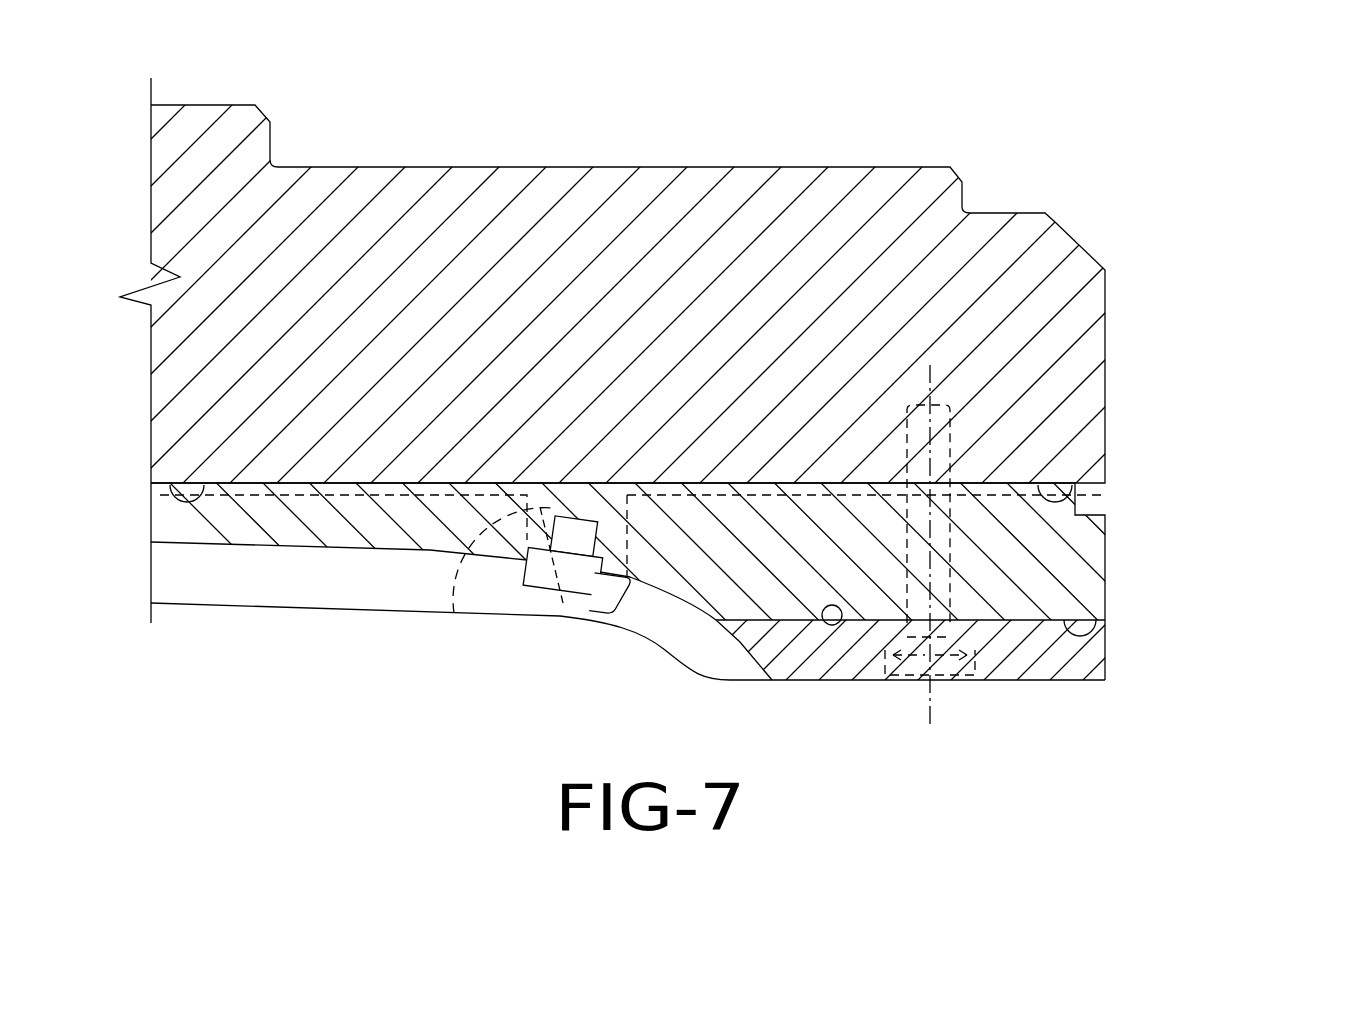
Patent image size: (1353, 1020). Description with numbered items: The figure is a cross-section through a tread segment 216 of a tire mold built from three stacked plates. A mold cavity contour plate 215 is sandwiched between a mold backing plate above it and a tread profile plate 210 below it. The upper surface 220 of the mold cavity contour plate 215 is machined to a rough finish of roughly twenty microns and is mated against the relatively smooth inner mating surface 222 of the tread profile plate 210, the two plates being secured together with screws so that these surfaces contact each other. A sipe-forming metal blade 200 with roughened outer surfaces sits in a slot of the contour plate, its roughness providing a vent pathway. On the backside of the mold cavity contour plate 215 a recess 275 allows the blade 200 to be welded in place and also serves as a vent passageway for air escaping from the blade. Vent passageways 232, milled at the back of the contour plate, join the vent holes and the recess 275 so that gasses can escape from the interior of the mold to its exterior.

The tread segment 216 is at (1190, 374).
The mold cavity contour plate 215 is at (1063, 568).
The tread profile plate 210 is at (1033, 655).
The inner mating surface 222 is at (836, 624).
The upper surface 220 is at (1062, 622).
The vent passageways 232 is at (1068, 500).
The blade 200 is at (543, 583).
The recess 275 is at (448, 623).